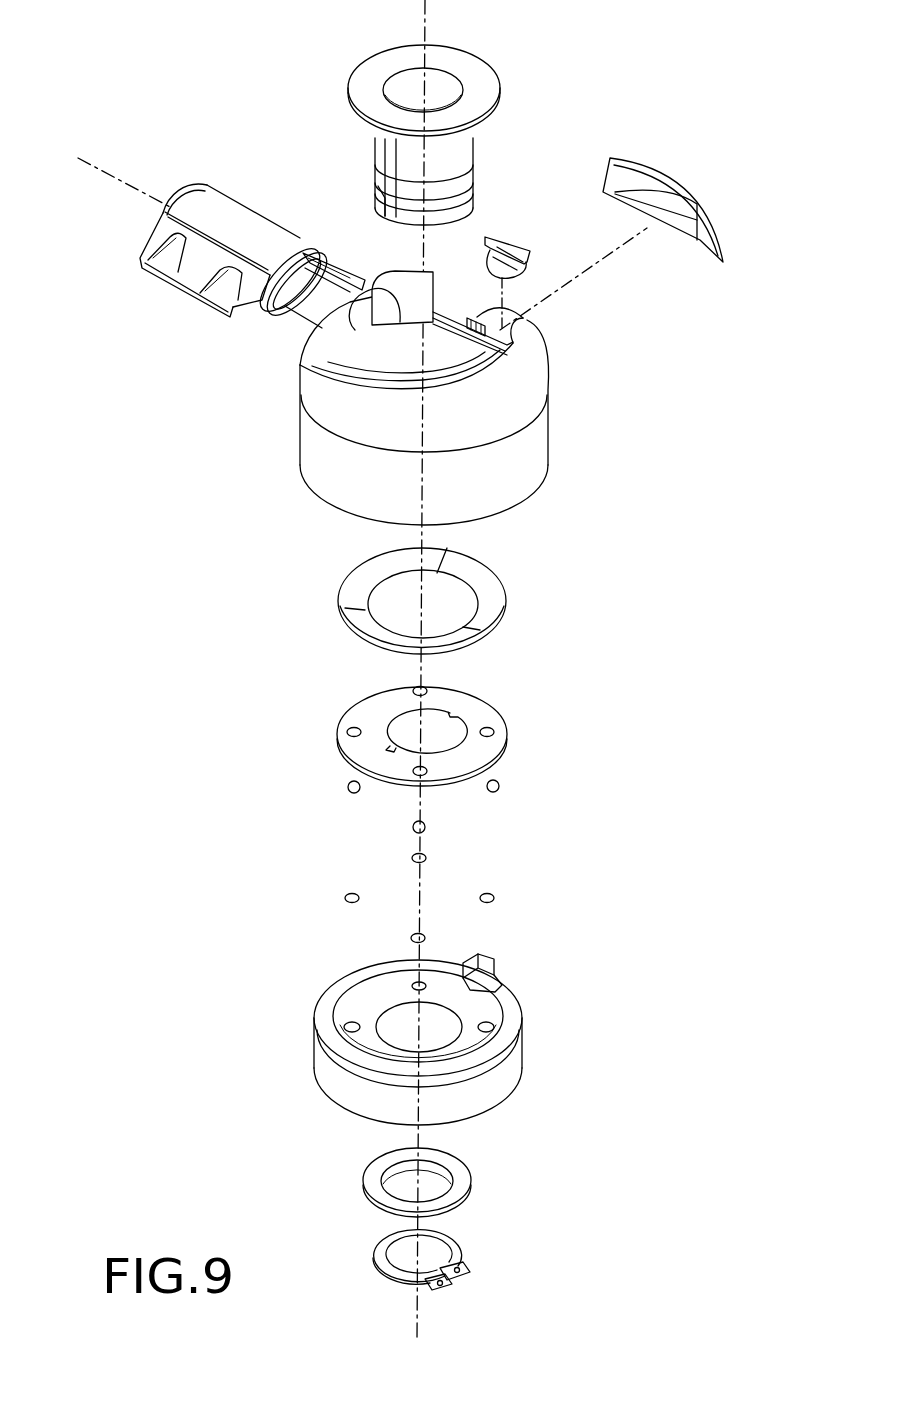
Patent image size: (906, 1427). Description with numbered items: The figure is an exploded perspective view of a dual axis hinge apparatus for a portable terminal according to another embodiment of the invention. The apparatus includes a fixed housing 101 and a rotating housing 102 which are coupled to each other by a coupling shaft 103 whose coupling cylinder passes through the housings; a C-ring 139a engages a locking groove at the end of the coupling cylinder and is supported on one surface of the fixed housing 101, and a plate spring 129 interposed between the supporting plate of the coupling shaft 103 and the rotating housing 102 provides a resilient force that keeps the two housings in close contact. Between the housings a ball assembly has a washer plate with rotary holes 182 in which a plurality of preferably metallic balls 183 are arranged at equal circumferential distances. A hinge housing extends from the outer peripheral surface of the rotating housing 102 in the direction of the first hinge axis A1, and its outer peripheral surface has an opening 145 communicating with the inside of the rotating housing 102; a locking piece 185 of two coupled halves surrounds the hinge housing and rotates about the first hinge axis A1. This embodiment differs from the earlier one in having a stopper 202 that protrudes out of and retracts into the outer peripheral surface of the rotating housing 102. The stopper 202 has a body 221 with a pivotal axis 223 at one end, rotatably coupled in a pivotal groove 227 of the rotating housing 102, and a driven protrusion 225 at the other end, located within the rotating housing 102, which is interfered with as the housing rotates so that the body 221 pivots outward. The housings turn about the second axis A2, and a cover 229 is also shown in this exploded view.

The fixed housing 101 is at (461, 1024).
The rotating housing 102 is at (435, 398).
The coupling shaft 103 is at (484, 51).
The plate spring 129 is at (488, 960).
The C-ring 139a is at (466, 1247).
The opening 145 is at (333, 282).
The rotary holes 182 is at (487, 713).
The balls 183 is at (499, 786).
The locking piece 185 is at (193, 273).
The stopper 202 is at (567, 246).
The body 221 is at (527, 256).
The pivotal axis 223 is at (503, 240).
The driven protrusion 225 is at (520, 275).
The pivotal groove 227 is at (525, 318).
The cover 229 is at (689, 173).
The first hinge axis A1 is at (112, 176).
The second rotation axis A2 is at (418, 1327).